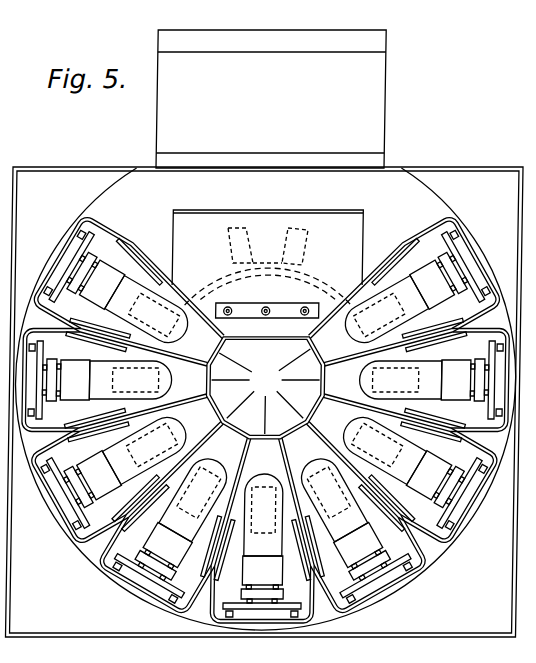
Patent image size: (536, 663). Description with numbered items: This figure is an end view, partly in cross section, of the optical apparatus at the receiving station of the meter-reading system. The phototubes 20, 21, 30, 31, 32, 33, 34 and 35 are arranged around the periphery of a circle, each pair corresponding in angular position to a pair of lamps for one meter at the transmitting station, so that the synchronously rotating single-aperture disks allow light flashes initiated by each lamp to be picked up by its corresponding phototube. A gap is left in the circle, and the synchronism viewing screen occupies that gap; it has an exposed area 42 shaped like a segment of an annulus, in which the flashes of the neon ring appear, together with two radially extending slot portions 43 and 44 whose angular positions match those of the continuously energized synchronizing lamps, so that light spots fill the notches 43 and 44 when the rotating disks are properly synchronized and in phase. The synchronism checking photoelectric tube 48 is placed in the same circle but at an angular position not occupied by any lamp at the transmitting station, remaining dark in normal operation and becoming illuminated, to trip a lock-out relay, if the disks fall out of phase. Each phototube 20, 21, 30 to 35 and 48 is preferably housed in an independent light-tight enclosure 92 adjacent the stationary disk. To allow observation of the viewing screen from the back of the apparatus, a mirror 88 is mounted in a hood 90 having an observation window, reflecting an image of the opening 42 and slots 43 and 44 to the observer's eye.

The hood 90 is at (376, 76).
The mirror 88 is at (363, 220).
The light-tight enclosures 92 is at (265, 388).
The exposed area 42 is at (324, 281).
The radially extending slot portion 43 is at (233, 238).
The radially extending slot portion 44 is at (295, 235).
The photoelectric tube 20 is at (353, 335).
The photoelectric tube 21 is at (358, 428).
The phototube 30 is at (371, 382).
The phototube 31 is at (315, 462).
The phototube 32 is at (270, 473).
The phototube 33 is at (186, 426).
The phototube 34 is at (221, 460).
The phototube 35 is at (172, 380).
The synchronism checking photoelectric tube 48 is at (186, 334).